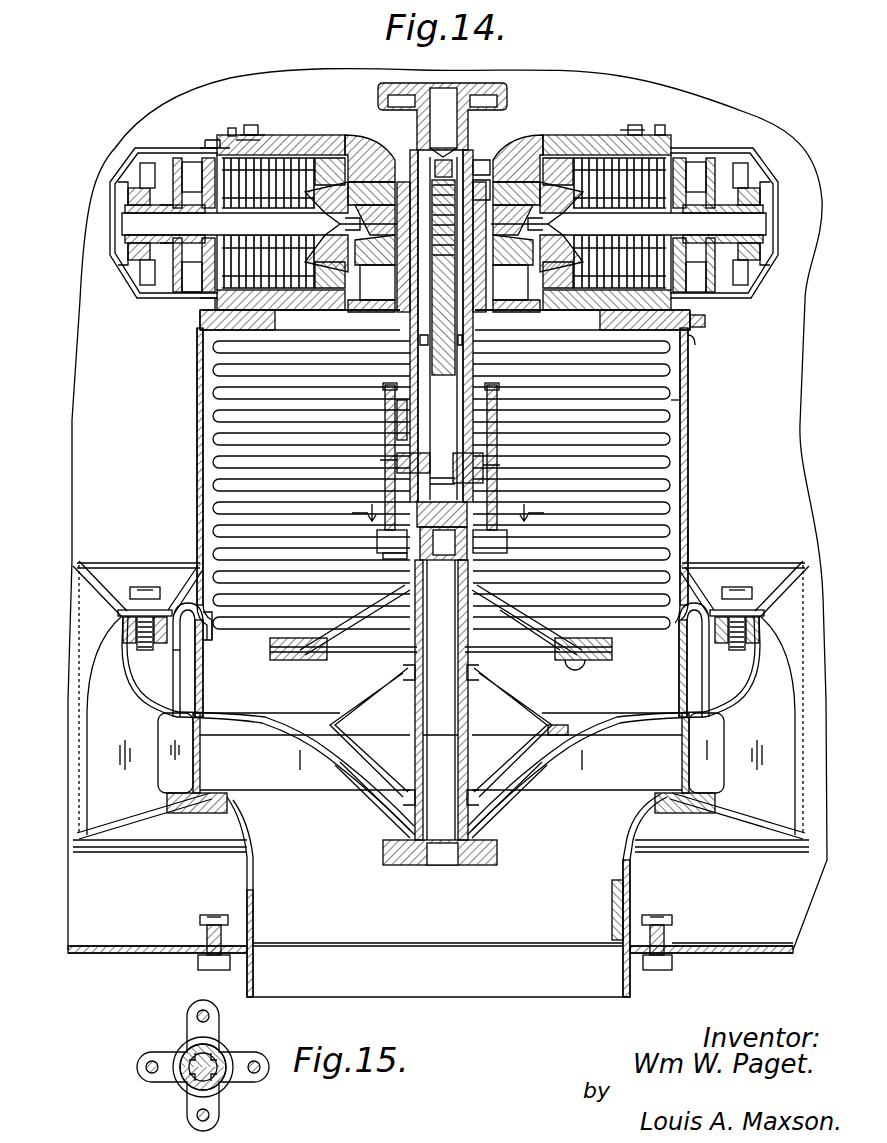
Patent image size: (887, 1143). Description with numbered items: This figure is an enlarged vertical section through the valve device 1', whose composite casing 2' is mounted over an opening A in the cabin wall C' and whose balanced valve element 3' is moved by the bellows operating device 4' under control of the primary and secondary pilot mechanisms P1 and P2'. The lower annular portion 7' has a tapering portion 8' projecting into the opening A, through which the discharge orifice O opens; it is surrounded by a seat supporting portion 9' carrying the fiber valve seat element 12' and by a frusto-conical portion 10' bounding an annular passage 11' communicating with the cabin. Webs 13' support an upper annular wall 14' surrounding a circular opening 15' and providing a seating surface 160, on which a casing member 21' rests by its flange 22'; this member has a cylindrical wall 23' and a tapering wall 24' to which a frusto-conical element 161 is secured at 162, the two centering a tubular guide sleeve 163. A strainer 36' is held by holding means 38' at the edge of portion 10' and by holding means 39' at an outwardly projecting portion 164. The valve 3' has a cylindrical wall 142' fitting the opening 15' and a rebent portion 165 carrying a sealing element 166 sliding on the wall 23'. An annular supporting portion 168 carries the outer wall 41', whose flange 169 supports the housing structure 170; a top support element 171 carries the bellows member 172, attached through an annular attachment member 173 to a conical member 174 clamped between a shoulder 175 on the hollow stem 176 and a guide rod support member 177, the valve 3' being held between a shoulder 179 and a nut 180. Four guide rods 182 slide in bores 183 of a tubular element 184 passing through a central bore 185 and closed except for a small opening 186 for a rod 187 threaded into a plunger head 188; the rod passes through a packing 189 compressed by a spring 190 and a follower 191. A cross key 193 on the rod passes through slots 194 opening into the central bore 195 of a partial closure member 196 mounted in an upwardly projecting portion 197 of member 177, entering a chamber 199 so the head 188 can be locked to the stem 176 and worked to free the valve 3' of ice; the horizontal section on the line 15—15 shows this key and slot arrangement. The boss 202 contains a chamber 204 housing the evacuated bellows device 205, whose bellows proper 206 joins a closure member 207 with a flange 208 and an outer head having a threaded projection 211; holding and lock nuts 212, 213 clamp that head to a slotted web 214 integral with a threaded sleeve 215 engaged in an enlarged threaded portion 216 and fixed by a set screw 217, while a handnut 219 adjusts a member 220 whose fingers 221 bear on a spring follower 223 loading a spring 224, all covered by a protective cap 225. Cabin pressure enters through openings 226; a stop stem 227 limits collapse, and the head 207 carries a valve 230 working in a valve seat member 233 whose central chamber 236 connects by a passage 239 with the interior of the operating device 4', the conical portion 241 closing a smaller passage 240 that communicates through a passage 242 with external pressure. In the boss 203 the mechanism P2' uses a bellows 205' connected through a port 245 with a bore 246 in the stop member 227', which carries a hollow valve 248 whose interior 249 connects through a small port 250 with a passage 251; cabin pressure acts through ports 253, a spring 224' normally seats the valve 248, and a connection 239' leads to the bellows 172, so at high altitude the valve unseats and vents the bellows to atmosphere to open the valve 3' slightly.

In FIG. 14, the discharge orifice O is at (500, 968).
In FIG. 14, the lower annular portion 7' is at (449, 842).
In FIG. 14, the tapering discharge-orifice-providing portion 8' is at (596, 910).
In FIG. 14, the opening A is at (630, 968).
In FIG. 14, the cabin wall C' is at (732, 962).
In FIG. 14, the nut 180 is at (472, 860).
In FIG. 14, the chamber 199 is at (445, 545).
In FIG. 14, the slots 194 is at (378, 540).
In FIG. 15, the slots 194 is at (182, 1048).
In FIG. 14, the upwardly projecting portion 197 is at (380, 555).
In FIG. 15, the upwardly projecting portion 197 is at (178, 1073).
In FIG. 14, the central bore 195 is at (507, 540).
In FIG. 15, the central bore 195 is at (186, 1082).
In FIG. 14, the section line 15 is at (446, 514).
In FIG. 14, the guide rods 182 is at (385, 387).
In FIG. 15, the guide rods 182 is at (198, 1012).
In FIG. 14, the packing 189 is at (397, 410).
In FIG. 14, the small opening 186 is at (478, 455).
In FIG. 14, the bores 183 is at (397, 463).
In FIG. 14, the cross key element 193 is at (456, 480).
In FIG. 14, the rod 187 is at (397, 325).
In FIG. 14, the follower 191 is at (473, 375).
In FIG. 14, the tubular element 184 is at (473, 325).
In FIG. 14, the manually operable plunger member 188 is at (497, 83).
In FIG. 14, the closure member 207 is at (445, 322).
In FIG. 14, the annular flange portion 208 is at (340, 322).
In FIG. 14, the bore 246 is at (537, 322).
In FIG. 14, the cylindrical outer wall portion 41' is at (183, 484).
In FIG. 14, the valve device 1' is at (703, 475).
In FIG. 14, the composite casing 2' is at (703, 533).
In FIG. 14, the primary expansible chamber operating device 4' is at (694, 398).
In FIG. 14, the bellows member 172 is at (690, 368).
In FIG. 14, the top support element 171 is at (696, 340).
In FIG. 14, the radially inwardly directed flange 169 is at (705, 320).
In FIG. 14, the protective cap 225 is at (110, 165).
In FIG. 14, the primary control pilot mechanism P1 is at (281, 204).
In FIG. 14, the chamber 204 is at (293, 140).
In FIG. 14, the evacuated bellows device 205 is at (293, 188).
In FIG. 14, the boss 202 is at (308, 148).
In FIG. 14, the stop stem 227 is at (231, 224).
In FIG. 14, the handnut 219 is at (128, 196).
In FIG. 14, the adjusting member 220 is at (140, 270).
In FIG. 14, the threaded projection 211 is at (118, 250).
In FIG. 14, the fingers 221 is at (178, 158).
In FIG. 14, the lock nut 213 is at (168, 290).
In FIG. 14, the holding nut 212 is at (185, 296).
In FIG. 14, the slotted support web 214 is at (172, 328).
In FIG. 14, the bellows proper 206 is at (214, 305).
In FIG. 14, the threaded sleeve 215 is at (212, 148).
In FIG. 14, the annular spring follower 223 is at (232, 128).
In FIG. 14, the set screw 217 is at (252, 125).
In FIG. 14, the enlarged threaded portion 216 is at (255, 137).
In FIG. 14, the spring 224 is at (277, 99).
In FIG. 14, the openings 226 is at (350, 150).
In FIG. 14, the valve seat member 233 is at (371, 170).
In FIG. 14, the central chamber 236 is at (375, 191).
In FIG. 14, the smaller passage 240 is at (374, 195).
In FIG. 14, the valve 230 is at (324, 197).
In FIG. 14, the conical portion 241 is at (326, 253).
In FIG. 14, the passage 239 is at (375, 267).
In FIG. 14, the passage 242 is at (374, 302).
In FIG. 14, the secondary control pilot mechanism P2' is at (660, 196).
In FIG. 14, the boss 203 is at (600, 137).
In FIG. 14, the spring 224' is at (633, 98).
In FIG. 14, the bellows 205' is at (674, 132).
In FIG. 14, the stop member 227' is at (721, 205).
In FIG. 14, the port 245 is at (580, 223).
In FIG. 14, the small port 250 is at (545, 158).
In FIG. 14, the ports 253 is at (566, 158).
In FIG. 14, the housing structure 170 is at (510, 158).
In FIG. 14, the central bore 185 is at (489, 159).
In FIG. 14, the passage 251 is at (490, 179).
In FIG. 14, the hollow interior 249 is at (537, 206).
In FIG. 14, the valve 248 is at (560, 253).
In FIG. 14, the connection 239' is at (513, 267).
In FIG. 14, the spring 190 is at (516, 307).
In FIG. 14, the holding means 39' is at (418, 557).
In FIG. 14, the outwardly projecting portion 164 is at (97, 590).
In FIG. 14, the annular supporting portion 168 is at (160, 587).
In FIG. 14, the flange 22' is at (733, 590).
In FIG. 14, the annular seating surface 160 is at (122, 618).
In FIG. 14, the upper annular wall 14' is at (128, 666).
In FIG. 14, the tapering wall portion 24' is at (295, 756).
In FIG. 14, the casing member 21' is at (202, 660).
In FIG. 14, the sealing element 166 is at (206, 632).
In FIG. 14, the cylindrical wall portion 142' is at (151, 666).
In FIG. 14, the circular opening 15' is at (156, 753).
In FIG. 14, the webs 13' is at (448, 794).
In FIG. 14, the valve-operating stem 176 is at (410, 632).
In FIG. 14, the annular attachment member 173 is at (543, 655).
In FIG. 14, the shoulder 175 is at (405, 585).
In FIG. 14, the guide rod support member 177 is at (478, 585).
In FIG. 14, the conical member 174 is at (520, 612).
In FIG. 14, the frusto-conical element 161 is at (365, 705).
In FIG. 14, the securing point 162 is at (560, 725).
In FIG. 14, the tubular guide sleeve 163 is at (470, 735).
In FIG. 14, the rebent portion 165 is at (683, 645).
In FIG. 14, the cylindrical wall portion 23' is at (667, 660).
In FIG. 14, the annular passage 11' is at (803, 700).
In FIG. 14, the strainer 36' is at (57, 700).
In FIG. 14, the holding means 38' is at (121, 829).
In FIG. 14, the valve seat element 12' is at (192, 832).
In FIG. 14, the balanced valve element 3' is at (371, 801).
In FIG. 14, the shoulder 179 is at (500, 835).
In FIG. 14, the annular valve seat supporting portion 9' is at (685, 815).
In FIG. 14, the outer frusto-conical portion 10' is at (737, 811).
In FIG. 15, the partial closure member 196 is at (195, 1090).